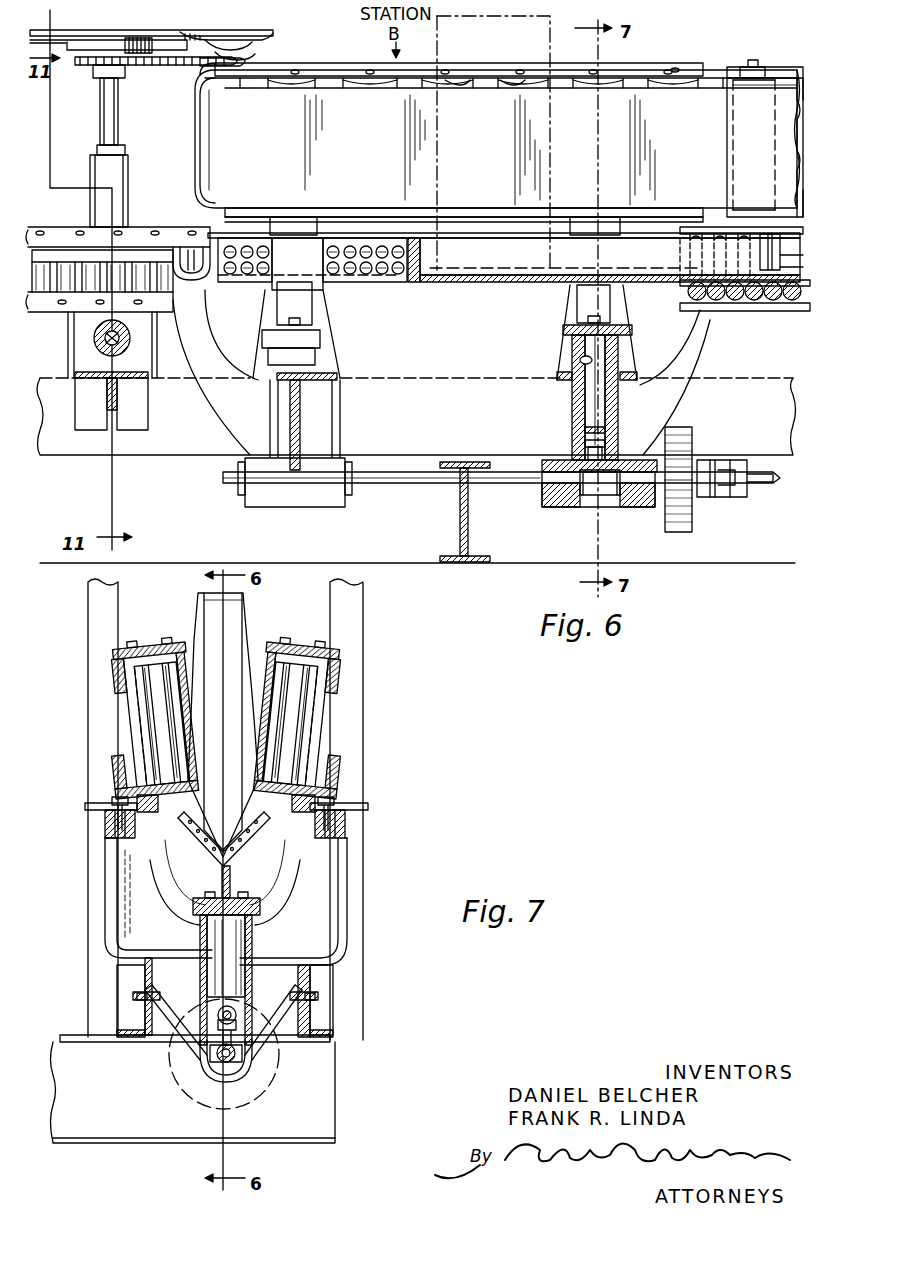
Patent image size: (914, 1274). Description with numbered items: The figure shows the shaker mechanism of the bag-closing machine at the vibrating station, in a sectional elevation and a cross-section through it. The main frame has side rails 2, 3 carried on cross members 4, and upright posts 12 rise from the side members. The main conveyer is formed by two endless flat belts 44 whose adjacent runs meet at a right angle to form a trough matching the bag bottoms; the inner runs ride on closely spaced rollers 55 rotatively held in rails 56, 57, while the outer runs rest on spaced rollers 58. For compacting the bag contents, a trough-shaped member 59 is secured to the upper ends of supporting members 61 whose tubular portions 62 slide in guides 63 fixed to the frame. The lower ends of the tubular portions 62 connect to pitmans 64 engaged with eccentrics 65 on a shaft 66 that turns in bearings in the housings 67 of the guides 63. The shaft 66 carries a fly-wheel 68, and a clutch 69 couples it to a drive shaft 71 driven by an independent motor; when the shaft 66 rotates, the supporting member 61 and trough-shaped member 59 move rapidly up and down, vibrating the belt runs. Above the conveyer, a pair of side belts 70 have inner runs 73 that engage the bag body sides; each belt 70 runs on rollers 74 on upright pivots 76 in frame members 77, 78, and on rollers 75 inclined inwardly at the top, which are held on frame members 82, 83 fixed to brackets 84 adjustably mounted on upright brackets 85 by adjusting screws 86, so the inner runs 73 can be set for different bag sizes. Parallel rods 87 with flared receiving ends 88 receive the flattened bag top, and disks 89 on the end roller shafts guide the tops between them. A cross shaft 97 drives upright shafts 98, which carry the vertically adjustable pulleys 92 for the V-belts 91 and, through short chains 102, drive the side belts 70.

In FIG. 7, the side rail 2 is at (310, 1020).
In FIG. 6, the side rail 3 is at (180, 440).
In FIG. 7, the side rail 3 is at (145, 1015).
In FIG. 6, the cross member 4 is at (458, 524).
In FIG. 7, the cross member 4 is at (328, 1085).
In FIG. 7, the upright post 12 is at (107, 975).
In FIG. 6, the endless flat belt 44 is at (432, 262).
In FIG. 6, the roller 55 is at (58, 278).
In FIG. 6, the rail 56 is at (140, 228).
In FIG. 6, the rail 57 is at (45, 315).
In FIG. 6, the spaced roller 58 is at (200, 283).
In FIG. 6, the trough-shaped member 59 is at (385, 272).
In FIG. 7, the trough-shaped member 59 is at (240, 848).
In FIG. 6, the supporting member 61 is at (297, 305).
In FIG. 7, the supporting member 61 is at (245, 875).
In FIG. 6, the tubular portion 62 is at (590, 362).
In FIG. 7, the tubular portion 62 is at (225, 948).
In FIG. 6, the guide 63 is at (310, 418).
In FIG. 7, the guide 63 is at (198, 945).
In FIG. 6, the pitman 64 is at (585, 452).
In FIG. 7, the pitman 64 is at (232, 1023).
In FIG. 6, the eccentric 65 is at (590, 490).
In FIG. 6, the shaft 66 is at (500, 488).
In FIG. 7, the shaft 66 is at (232, 1060).
In FIG. 6, the housing 67 is at (312, 495).
In FIG. 7, the housing 67 is at (200, 1075).
In FIG. 6, the fly-wheel 68 is at (681, 532).
In FIG. 7, the fly-wheel 68 is at (198, 1092).
In FIG. 6, the clutch 69 is at (725, 497).
In FIG. 7, the side belt 70 is at (130, 698).
In FIG. 6, the drive shaft 71 is at (762, 488).
In FIG. 6, the inner run 73 is at (330, 90).
In FIG. 7, the inner run 73 is at (150, 715).
In FIG. 6, the roller 74 is at (740, 80).
In FIG. 7, the roller 74 is at (282, 692).
In FIG. 6, the roller 75 is at (503, 86).
In FIG. 7, the roller 75 is at (155, 725).
In FIG. 6, the upright pivot 76 is at (760, 64).
In FIG. 6, the frame member 77 is at (795, 70).
In FIG. 7, the frame member 77 is at (118, 672).
In FIG. 6, the frame member 78 is at (800, 192).
In FIG. 6, the frame member 82 is at (650, 67).
In FIG. 7, the frame member 82 is at (125, 655).
In FIG. 6, the frame member 83 is at (655, 212).
In FIG. 7, the frame member 83 is at (112, 765).
In FIG. 6, the bracket 84 is at (295, 220).
In FIG. 7, the bracket 84 is at (150, 810).
In FIG. 6, the upright bracket 85 is at (330, 355).
In FIG. 7, the upright bracket 85 is at (345, 862).
In FIG. 7, the adjusting screw 86 is at (118, 796).
In FIG. 6, the rod 87 is at (178, 30).
In FIG. 6, the receiving end 88 is at (265, 35).
In FIG. 6, the disk 89 is at (250, 45).
In FIG. 6, the V-belt 91 is at (52, 48).
In FIG. 6, the pulley 92 is at (140, 38).
In FIG. 6, the cross shaft 97 is at (100, 340).
In FIG. 6, the upright shaft 98 is at (112, 108).
In FIG. 6, the short chain 102 is at (160, 66).